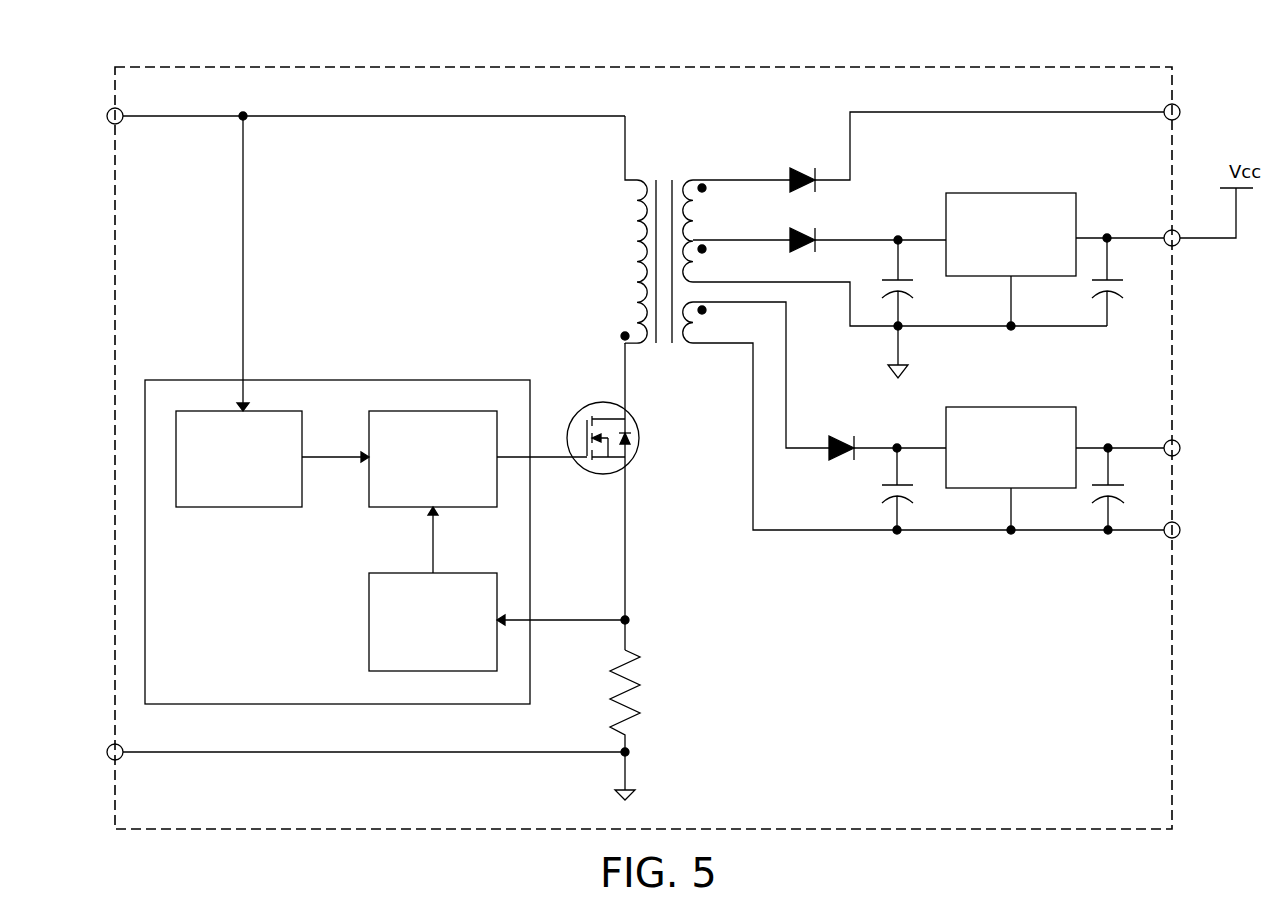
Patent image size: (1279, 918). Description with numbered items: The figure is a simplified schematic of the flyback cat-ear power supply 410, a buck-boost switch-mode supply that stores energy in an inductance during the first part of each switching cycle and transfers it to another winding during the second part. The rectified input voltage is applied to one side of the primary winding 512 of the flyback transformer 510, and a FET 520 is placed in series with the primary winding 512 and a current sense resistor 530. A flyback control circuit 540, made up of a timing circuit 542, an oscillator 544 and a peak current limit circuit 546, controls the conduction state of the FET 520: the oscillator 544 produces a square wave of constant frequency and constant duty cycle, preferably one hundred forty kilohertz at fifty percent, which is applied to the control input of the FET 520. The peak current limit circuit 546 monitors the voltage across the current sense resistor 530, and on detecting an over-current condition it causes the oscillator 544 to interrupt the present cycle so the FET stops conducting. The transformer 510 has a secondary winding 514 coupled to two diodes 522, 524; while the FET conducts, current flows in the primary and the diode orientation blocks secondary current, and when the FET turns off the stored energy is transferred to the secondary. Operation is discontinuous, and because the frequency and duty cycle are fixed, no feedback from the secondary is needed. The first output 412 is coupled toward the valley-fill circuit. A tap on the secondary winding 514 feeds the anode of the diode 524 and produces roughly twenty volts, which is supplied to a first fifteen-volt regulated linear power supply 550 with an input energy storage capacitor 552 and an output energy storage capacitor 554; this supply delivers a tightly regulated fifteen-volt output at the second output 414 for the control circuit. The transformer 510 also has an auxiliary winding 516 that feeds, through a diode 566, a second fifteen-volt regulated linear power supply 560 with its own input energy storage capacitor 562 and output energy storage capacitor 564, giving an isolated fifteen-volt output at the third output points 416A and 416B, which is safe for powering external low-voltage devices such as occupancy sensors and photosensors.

The flyback cat-ear power supply 410 is at (392, 67).
The first output 412 is at (1181, 111).
The second output 414 is at (1176, 246).
The third output point 416A is at (1180, 446).
The third output point 416B is at (1180, 528).
The flyback transformer 510 is at (650, 229).
The primary winding 512 is at (640, 244).
The secondary winding 514 is at (693, 206).
The auxiliary winding 516 is at (690, 321).
The FET 520 is at (633, 462).
The diode 522 is at (806, 169).
The diode 524 is at (800, 236).
The current sense resistor 530 is at (632, 682).
The flyback control circuit 540 is at (165, 395).
The timing circuit 542 is at (275, 426).
The oscillator 544 is at (436, 426).
The peak current limit circuit 546 is at (465, 654).
The first 15V regulated linear power supply 550 is at (987, 202).
The input energy storage capacitor 552 is at (886, 279).
The output energy storage capacitor 554 is at (1118, 296).
The second 15V regulated linear power supply 560 is at (978, 418).
The input energy storage capacitor 562 is at (885, 484).
The output energy storage capacitor 564 is at (1112, 487).
The diode 566 is at (848, 440).